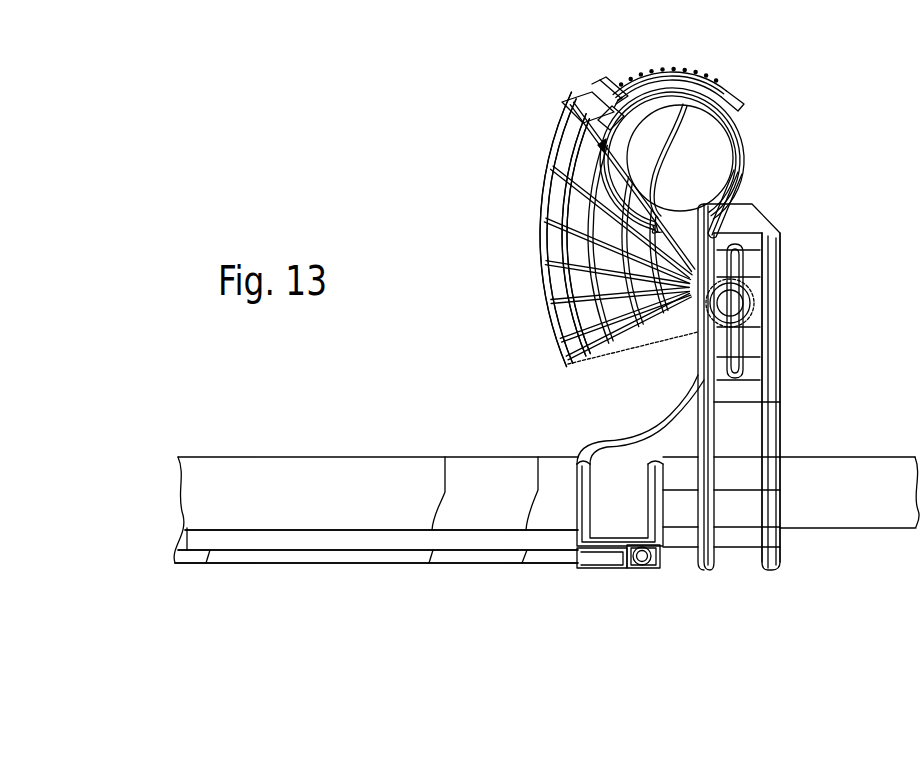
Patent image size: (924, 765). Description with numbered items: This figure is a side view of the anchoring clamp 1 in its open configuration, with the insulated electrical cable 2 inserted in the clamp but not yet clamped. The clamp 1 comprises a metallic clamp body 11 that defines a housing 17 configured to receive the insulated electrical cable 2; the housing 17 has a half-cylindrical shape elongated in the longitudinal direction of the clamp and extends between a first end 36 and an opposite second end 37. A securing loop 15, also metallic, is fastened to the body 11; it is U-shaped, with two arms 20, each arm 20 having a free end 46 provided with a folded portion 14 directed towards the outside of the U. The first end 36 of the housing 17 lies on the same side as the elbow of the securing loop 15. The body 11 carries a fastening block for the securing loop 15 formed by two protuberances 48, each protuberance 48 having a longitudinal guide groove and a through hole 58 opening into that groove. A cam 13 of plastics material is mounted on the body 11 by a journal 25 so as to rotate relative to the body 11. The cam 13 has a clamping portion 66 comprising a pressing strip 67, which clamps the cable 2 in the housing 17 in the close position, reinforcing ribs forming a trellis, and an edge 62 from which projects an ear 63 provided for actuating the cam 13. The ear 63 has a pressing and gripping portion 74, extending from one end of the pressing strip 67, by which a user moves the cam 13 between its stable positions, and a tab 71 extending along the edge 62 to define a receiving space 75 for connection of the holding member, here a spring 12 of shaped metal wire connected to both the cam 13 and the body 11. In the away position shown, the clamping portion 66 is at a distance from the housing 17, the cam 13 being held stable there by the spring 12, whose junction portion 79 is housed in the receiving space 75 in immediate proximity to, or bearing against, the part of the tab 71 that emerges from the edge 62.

The anchoring clamp 1 is at (400, 136).
The insulated electrical cable 2 is at (302, 457).
The clamp body 11 is at (782, 386).
The spring 12 is at (744, 148).
The cam 13 is at (552, 130).
The folded portion 14 is at (642, 560).
The securing loop 15 is at (338, 592).
The housing 17 is at (606, 424).
The arm 20 is at (413, 563).
The journal 25 is at (738, 305).
The first end 36 is at (566, 458).
The second end 37 is at (790, 492).
The free end 46 is at (553, 568).
The protuberance 48 is at (603, 570).
The through hole 58 is at (648, 562).
The edge 62 is at (655, 168).
The ear 63 is at (616, 90).
The clamping portion 66 is at (541, 244).
The pressing strip 67 is at (557, 307).
The tab 71 is at (668, 226).
The pressing and gripping portion 74 is at (722, 90).
The receiving space 75 is at (682, 232).
The junction portion 79 is at (600, 150).